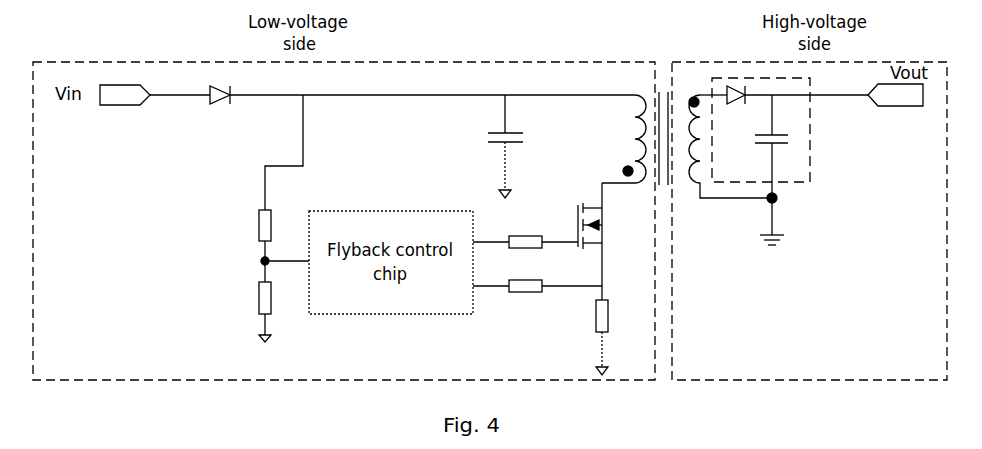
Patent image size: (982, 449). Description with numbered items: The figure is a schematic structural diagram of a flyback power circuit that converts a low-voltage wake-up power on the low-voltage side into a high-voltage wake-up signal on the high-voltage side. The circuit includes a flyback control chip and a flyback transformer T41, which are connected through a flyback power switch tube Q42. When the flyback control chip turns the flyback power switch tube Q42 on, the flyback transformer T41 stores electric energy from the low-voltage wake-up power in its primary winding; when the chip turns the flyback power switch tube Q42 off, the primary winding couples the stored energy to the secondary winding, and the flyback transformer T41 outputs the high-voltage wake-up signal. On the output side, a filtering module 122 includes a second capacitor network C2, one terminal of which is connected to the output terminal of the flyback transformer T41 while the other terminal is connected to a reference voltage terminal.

The filtering module 122 is at (798, 130).
The flyback transformer T41 is at (687, 109).
The flyback power switch tube Q42 is at (572, 235).
The second capacitor network C2 is at (765, 146).